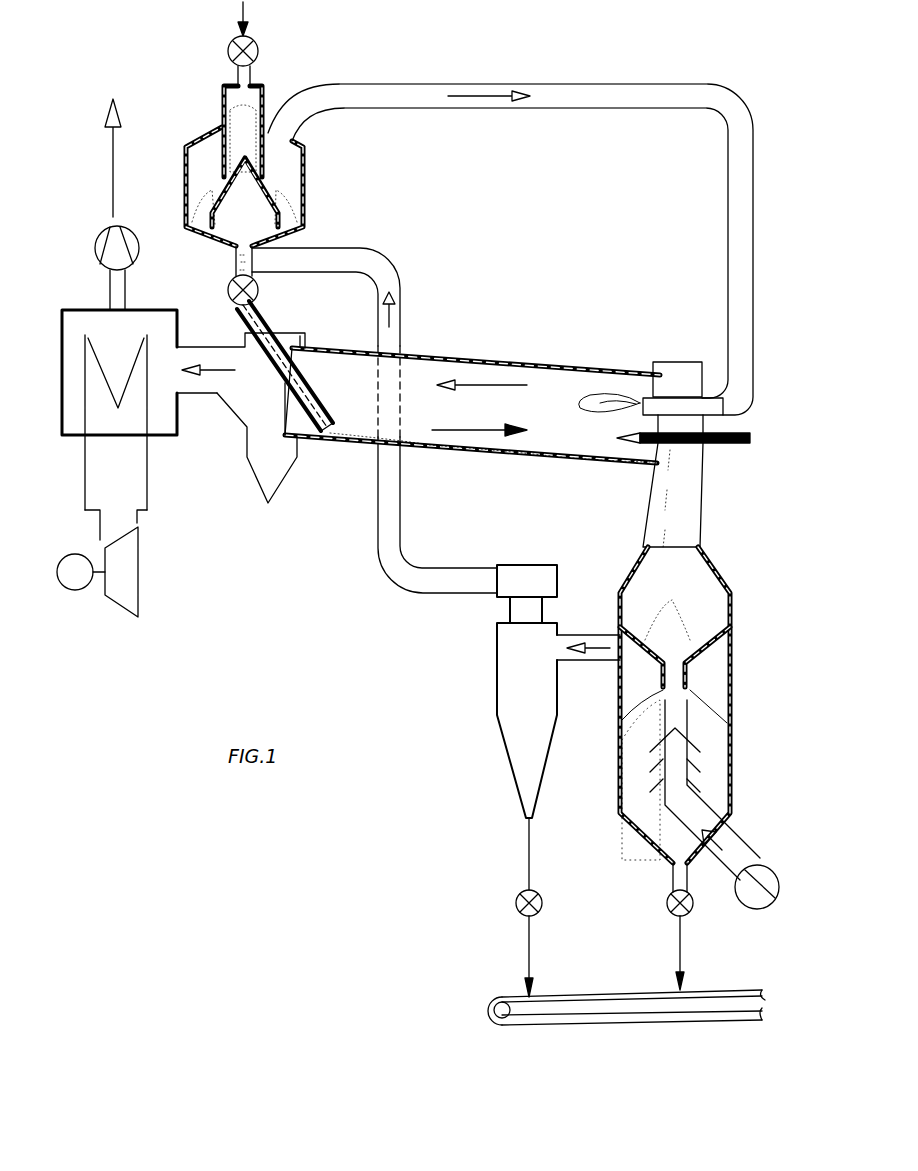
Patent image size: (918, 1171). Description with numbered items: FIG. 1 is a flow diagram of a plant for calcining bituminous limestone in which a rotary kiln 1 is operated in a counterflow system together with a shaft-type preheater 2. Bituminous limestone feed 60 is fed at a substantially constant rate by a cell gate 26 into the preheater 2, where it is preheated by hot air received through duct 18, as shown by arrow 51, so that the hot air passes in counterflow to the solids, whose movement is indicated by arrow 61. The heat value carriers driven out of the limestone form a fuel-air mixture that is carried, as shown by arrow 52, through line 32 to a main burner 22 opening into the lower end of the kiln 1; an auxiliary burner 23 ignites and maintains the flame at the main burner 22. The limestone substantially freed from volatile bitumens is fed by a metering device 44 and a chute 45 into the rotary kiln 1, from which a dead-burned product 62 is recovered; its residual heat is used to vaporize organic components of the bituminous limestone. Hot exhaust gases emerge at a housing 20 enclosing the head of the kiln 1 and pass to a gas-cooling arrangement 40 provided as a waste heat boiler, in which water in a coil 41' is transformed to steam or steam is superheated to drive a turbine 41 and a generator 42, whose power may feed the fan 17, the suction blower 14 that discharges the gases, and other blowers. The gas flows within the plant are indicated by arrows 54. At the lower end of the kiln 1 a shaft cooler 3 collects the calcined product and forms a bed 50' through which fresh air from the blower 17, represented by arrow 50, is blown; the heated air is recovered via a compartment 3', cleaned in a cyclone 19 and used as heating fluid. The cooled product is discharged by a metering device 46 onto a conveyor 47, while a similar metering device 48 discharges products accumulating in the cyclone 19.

The rotary kiln 1 is at (592, 365).
The shaft-type preheater 2 is at (307, 178).
The shaft cooler 3 is at (703, 705).
The compartment 3' is at (691, 647).
The suction blower 14 is at (125, 228).
The blower 17 is at (757, 910).
The duct 18 is at (415, 593).
The cyclone 19 is at (497, 665).
The housing 20 is at (230, 405).
The main burner 22 is at (672, 395).
The auxiliary burner 23 is at (718, 445).
The cell gate 26 is at (258, 51).
The line 32 is at (372, 112).
The gas-cooling arrangement 40 is at (152, 308).
The turbine 41 is at (142, 598).
The coil 41' is at (103, 437).
The generator 42 is at (80, 592).
The metering device 44 is at (230, 287).
The chute 45 is at (270, 310).
The metering device 46 is at (667, 905).
The conveyor 47 is at (597, 993).
The metering device 48 is at (516, 900).
The fresh air flow 50 is at (721, 790).
The product bed 50' is at (714, 760).
The hot gas flow 51 is at (402, 325).
The fuel-air mixture flow 52 is at (480, 96).
The gas flow 54 is at (218, 368).
The bituminous limestone feed 60 is at (236, 86).
The solids flow 61 is at (273, 372).
The dead-burned product 62 is at (668, 512).